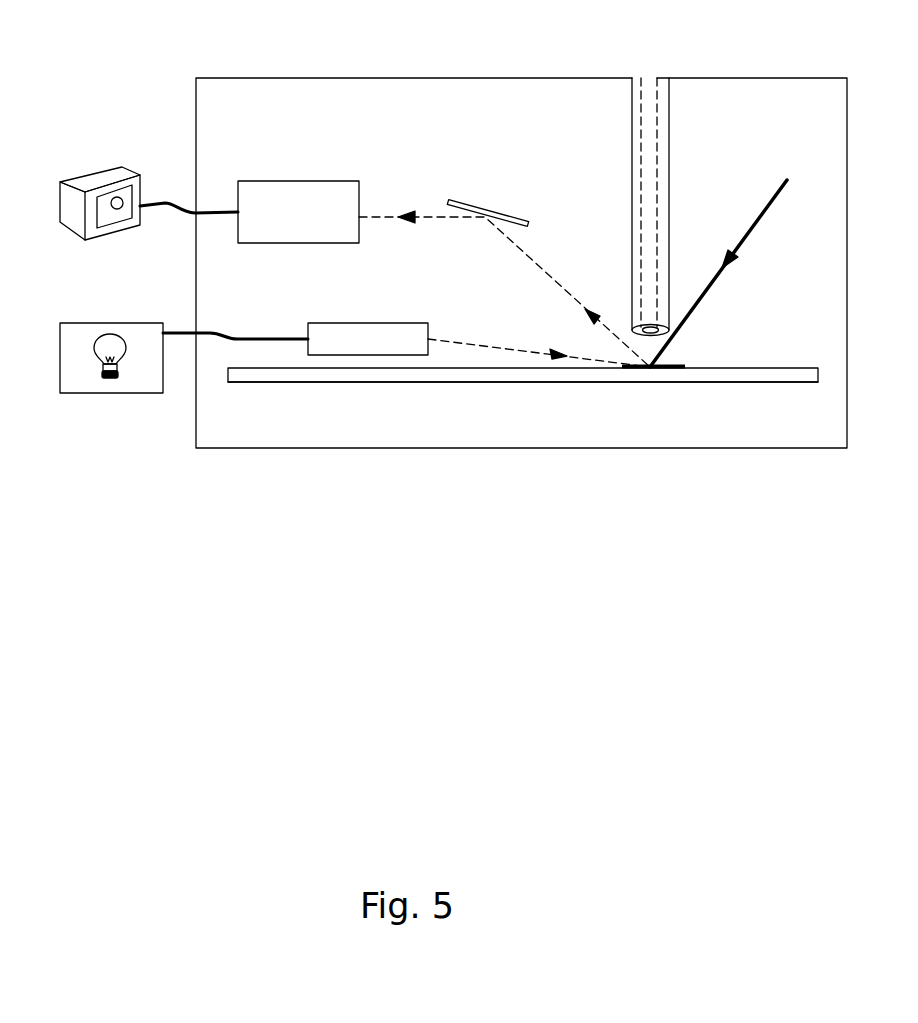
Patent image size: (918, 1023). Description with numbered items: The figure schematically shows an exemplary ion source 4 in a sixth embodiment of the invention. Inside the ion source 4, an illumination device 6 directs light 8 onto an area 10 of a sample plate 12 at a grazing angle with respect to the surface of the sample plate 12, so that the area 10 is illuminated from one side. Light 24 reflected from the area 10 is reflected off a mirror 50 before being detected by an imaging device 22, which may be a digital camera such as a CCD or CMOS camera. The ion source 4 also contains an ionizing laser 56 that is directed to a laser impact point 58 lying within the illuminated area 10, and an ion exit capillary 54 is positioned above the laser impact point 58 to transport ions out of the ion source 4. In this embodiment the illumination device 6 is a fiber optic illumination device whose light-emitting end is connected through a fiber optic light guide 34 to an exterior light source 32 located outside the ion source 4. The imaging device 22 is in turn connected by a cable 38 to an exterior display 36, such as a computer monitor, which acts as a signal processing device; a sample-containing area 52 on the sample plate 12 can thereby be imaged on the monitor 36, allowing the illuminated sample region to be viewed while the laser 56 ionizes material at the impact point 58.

The ion source 4 is at (521, 263).
The illumination device 6 is at (367, 330).
The light 8 is at (507, 350).
The area 10 is at (668, 383).
The sample plate 12 is at (787, 375).
The imaging device 22 is at (297, 188).
The light 24 is at (530, 245).
The light source 32 is at (90, 395).
The light guide 34 is at (263, 333).
The display 36 is at (80, 220).
The cable 38 is at (220, 217).
The mirror 50 is at (473, 202).
The sample-containing area 52 is at (115, 203).
The tube 54 is at (663, 132).
The ionizing laser 56 is at (743, 242).
The laser impact point 58 is at (660, 362).